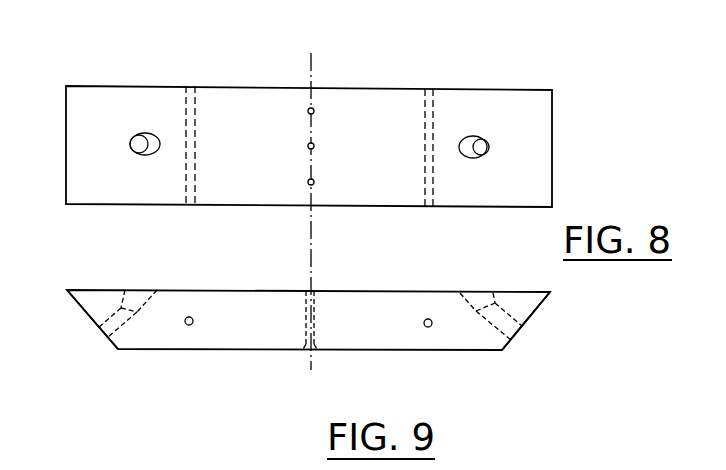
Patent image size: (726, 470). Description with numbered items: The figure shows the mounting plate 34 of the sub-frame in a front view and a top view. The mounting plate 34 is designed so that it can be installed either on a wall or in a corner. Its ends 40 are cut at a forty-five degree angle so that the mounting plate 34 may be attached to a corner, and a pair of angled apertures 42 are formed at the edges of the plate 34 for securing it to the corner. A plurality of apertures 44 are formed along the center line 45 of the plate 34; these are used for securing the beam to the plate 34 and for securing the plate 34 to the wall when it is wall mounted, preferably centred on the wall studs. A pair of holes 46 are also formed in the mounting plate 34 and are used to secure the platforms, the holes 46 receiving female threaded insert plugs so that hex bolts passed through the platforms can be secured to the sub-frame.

In FIG. 8, the mounting plate 34 is at (545, 185).
In FIG. 9, the mounting plate 34 is at (218, 341).
In FIG. 9, the ends 40 is at (118, 350).
In FIG. 8, the angled apertures 42 is at (489, 146).
In FIG. 9, the angled apertures 42 is at (144, 290).
In FIG. 8, the apertures 44 is at (314, 113).
In FIG. 9, the apertures 44 is at (318, 297).
In FIG. 8, the center line 45 is at (311, 62).
In FIG. 8, the holes 46 is at (193, 86).
In FIG. 9, the holes 46 is at (428, 328).